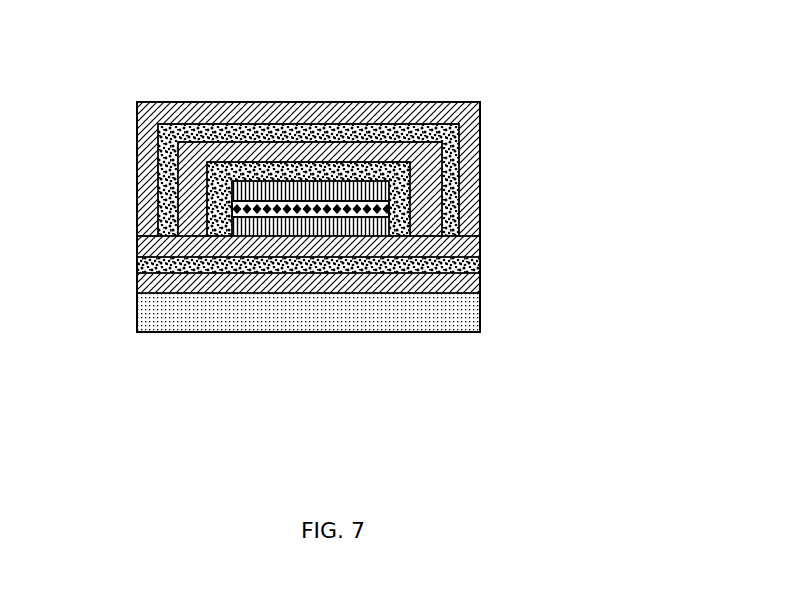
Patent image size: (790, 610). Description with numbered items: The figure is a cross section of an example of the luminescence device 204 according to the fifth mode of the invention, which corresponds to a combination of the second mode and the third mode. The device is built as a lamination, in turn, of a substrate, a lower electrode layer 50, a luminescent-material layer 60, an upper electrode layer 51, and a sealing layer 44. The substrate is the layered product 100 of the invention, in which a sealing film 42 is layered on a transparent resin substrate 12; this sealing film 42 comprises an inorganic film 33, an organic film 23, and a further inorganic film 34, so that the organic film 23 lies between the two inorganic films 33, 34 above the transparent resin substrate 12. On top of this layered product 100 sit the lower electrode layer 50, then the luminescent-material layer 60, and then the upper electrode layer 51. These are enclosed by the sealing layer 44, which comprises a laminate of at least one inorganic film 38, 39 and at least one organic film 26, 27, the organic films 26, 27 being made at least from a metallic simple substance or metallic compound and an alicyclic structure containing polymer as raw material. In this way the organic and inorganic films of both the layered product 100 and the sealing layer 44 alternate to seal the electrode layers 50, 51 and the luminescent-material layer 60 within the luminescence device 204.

The luminescence device 204 is at (203, 66).
The sealing layer 44 is at (558, 67).
The inorganic film 39 is at (463, 102).
The organic film 27 is at (457, 132).
The inorganic film 38 is at (422, 152).
The organic film 26 is at (407, 177).
The upper electrode layer 51 is at (357, 192).
The luminescent-material layer 60 is at (357, 213).
The lower electrode layer 50 is at (357, 228).
The layered product 100 is at (121, 238).
The sealing film 42 is at (630, 368).
The inorganic film 34 is at (347, 246).
The organic film 23 is at (323, 268).
The inorganic film 33 is at (297, 288).
The transparent resin substrate 12 is at (295, 324).